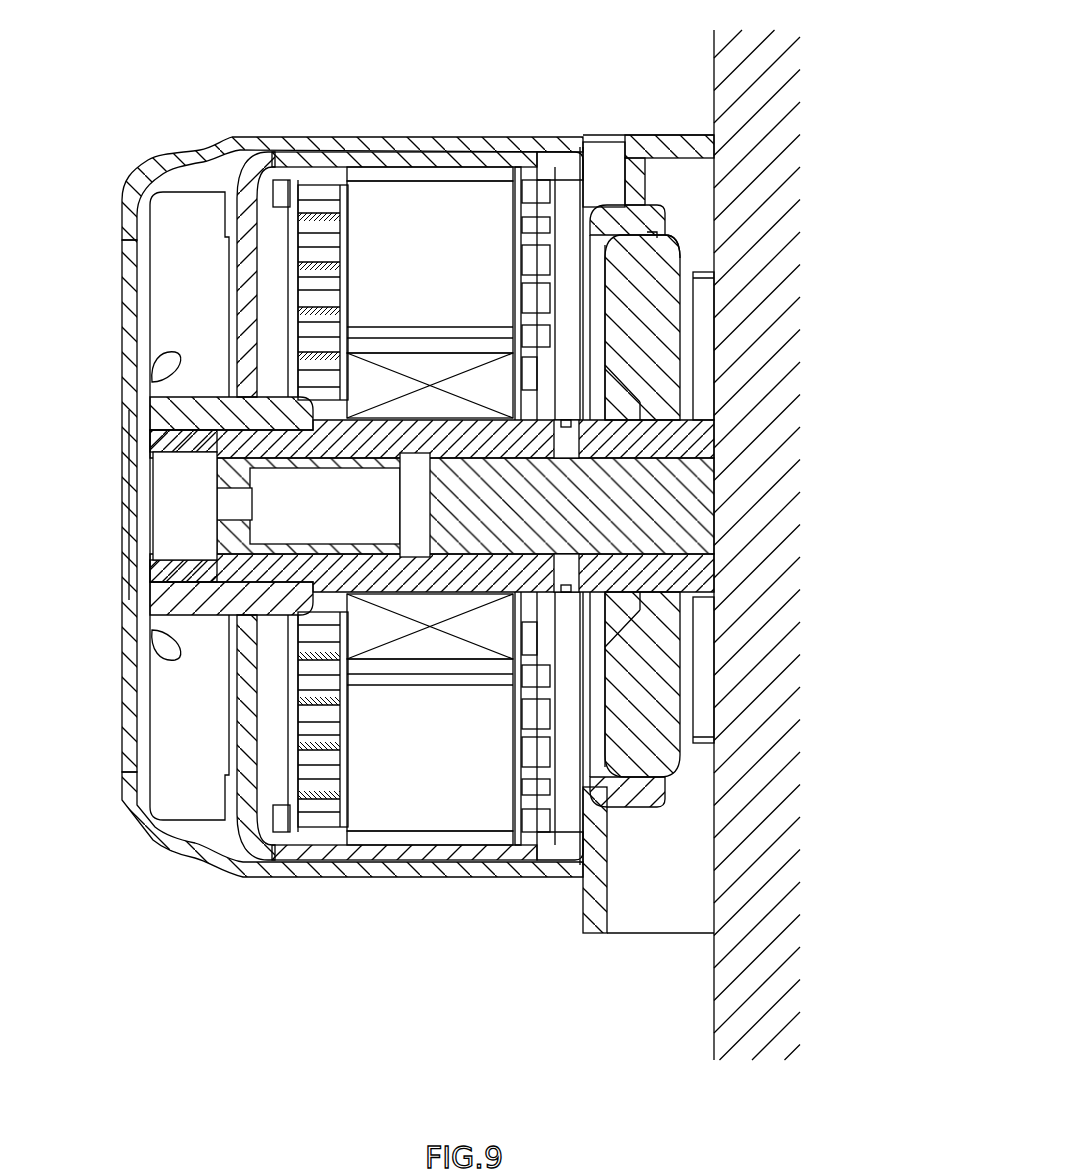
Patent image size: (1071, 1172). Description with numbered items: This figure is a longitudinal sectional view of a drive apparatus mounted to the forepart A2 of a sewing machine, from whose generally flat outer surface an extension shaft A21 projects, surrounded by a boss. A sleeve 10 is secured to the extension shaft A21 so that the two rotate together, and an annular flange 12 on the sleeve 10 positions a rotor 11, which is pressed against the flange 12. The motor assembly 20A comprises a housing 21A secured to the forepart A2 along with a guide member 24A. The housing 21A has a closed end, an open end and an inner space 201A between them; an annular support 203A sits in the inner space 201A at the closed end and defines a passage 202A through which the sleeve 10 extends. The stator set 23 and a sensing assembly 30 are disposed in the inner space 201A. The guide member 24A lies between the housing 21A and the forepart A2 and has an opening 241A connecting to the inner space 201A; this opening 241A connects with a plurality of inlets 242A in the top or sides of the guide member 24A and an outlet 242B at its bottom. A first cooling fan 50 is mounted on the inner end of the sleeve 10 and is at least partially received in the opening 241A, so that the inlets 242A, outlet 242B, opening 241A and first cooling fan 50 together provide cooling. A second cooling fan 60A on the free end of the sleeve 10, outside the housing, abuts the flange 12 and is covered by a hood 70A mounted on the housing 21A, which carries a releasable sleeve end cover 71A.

The sleeve 10 is at (143, 443).
The rotor 11 is at (430, 375).
The annular flange 12 is at (300, 865).
The motor assembly 20A is at (607, 23).
The housing 21A is at (550, 137).
The stator set 23 is at (447, 183).
The guide member 24A is at (673, 135).
The sensing assembly 30 is at (288, 200).
The first cooling fan 50 is at (700, 360).
The second cooling fan 60A is at (163, 218).
The hood 70A is at (165, 153).
The sleeve end cover 71A is at (112, 488).
The inner space 201A is at (700, 862).
The passage 202A is at (240, 415).
The annular support 203A is at (283, 615).
The opening 241A is at (705, 225).
The inlets 242A is at (603, 167).
The outlet 242B is at (660, 900).
The forepart A2 is at (777, 340).
The extension shaft A21 is at (700, 500).